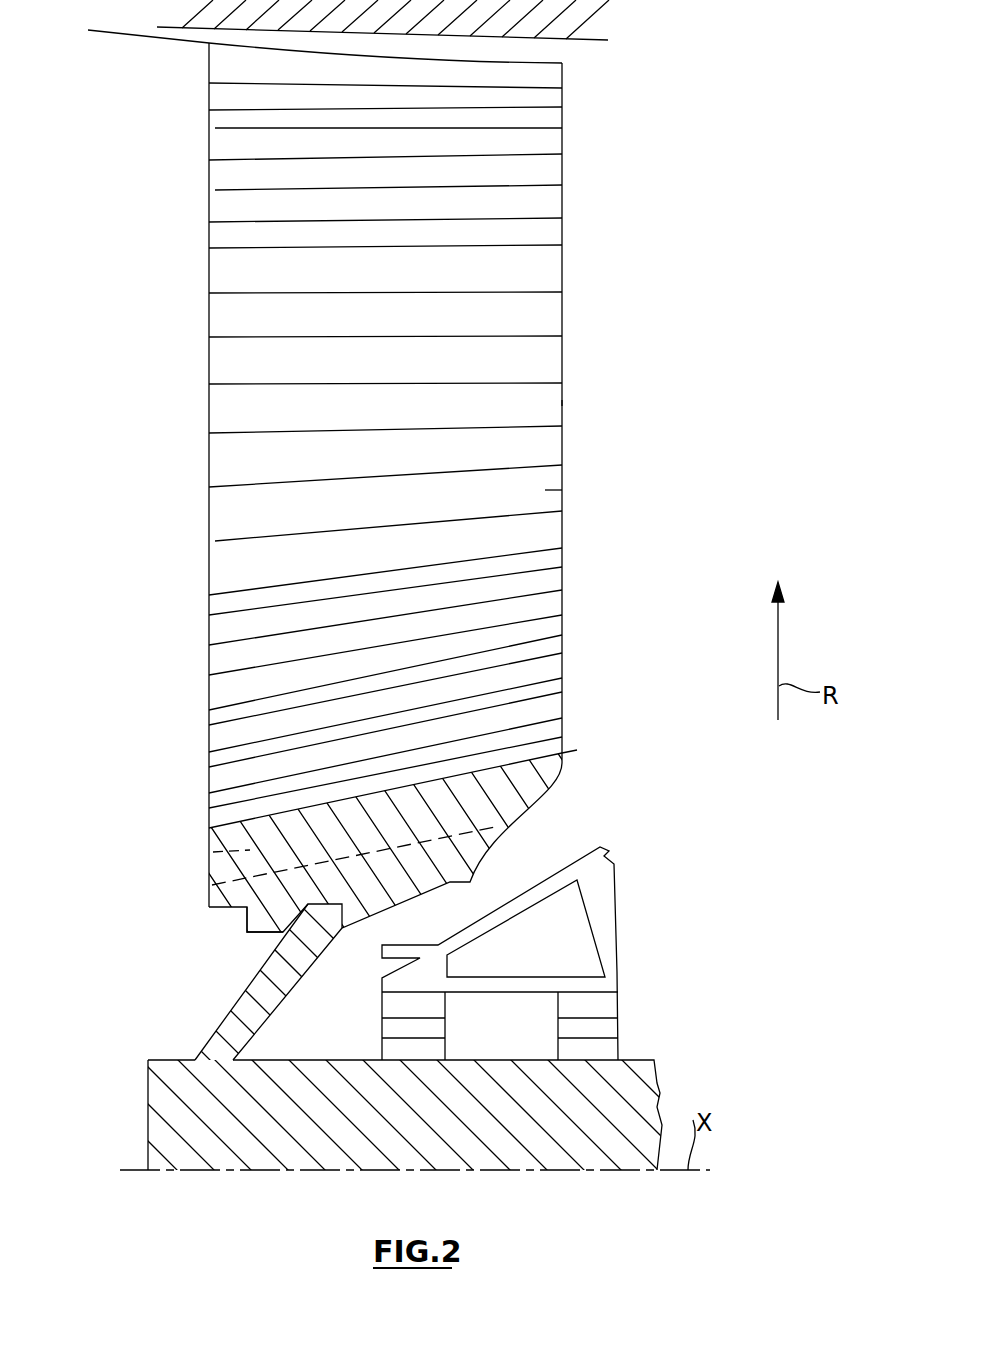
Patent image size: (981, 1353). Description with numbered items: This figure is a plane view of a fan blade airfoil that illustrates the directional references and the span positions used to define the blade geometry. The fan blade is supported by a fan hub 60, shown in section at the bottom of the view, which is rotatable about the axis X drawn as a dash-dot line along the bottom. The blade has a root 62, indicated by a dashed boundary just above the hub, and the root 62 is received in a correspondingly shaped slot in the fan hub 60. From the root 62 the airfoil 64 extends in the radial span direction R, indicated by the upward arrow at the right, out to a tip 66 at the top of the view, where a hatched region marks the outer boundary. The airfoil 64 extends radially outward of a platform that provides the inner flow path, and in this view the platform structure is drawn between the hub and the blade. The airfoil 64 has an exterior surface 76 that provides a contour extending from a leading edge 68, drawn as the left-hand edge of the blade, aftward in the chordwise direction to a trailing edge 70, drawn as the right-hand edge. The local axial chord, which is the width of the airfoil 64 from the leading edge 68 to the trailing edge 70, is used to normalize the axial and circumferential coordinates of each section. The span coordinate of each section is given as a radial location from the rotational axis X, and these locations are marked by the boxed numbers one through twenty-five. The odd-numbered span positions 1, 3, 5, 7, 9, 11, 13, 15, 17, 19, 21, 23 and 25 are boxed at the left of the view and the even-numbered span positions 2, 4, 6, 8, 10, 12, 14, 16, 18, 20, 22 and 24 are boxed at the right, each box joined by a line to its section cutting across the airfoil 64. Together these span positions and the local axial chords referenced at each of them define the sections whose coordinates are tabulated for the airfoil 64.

The span position 1 is at (209, 828).
The span position 2 is at (562, 737).
The span position 3 is at (209, 793).
The span position 4 is at (562, 692).
The span position 5 is at (209, 752).
The span position 6 is at (562, 653).
The span position 7 is at (209, 710).
The span position 8 is at (562, 615).
The span position 9 is at (209, 645).
The span position 10 is at (562, 567).
The span position 11 is at (209, 595).
The span position 12 is at (562, 511).
The span position 13 is at (209, 487).
The span position 14 is at (562, 426).
The span position 15 is at (209, 384).
The span position 16 is at (562, 336).
The span position 17 is at (209, 293).
The span position 18 is at (562, 245).
The span position 19 is at (209, 222).
The span position 20 is at (562, 185).
The span position 21 is at (209, 160).
The span position 22 is at (562, 128).
The span position 23 is at (209, 110).
The span position 24 is at (562, 88).
The span position 25 is at (46, 40).
The fan hub 60 is at (268, 913).
The root 62 is at (207, 862).
The airfoil 64 is at (562, 404).
The tip 66 is at (536, 62).
The leading edge 68 is at (209, 410).
The trailing edge 70 is at (563, 308).
The exterior surface 76 is at (562, 490).